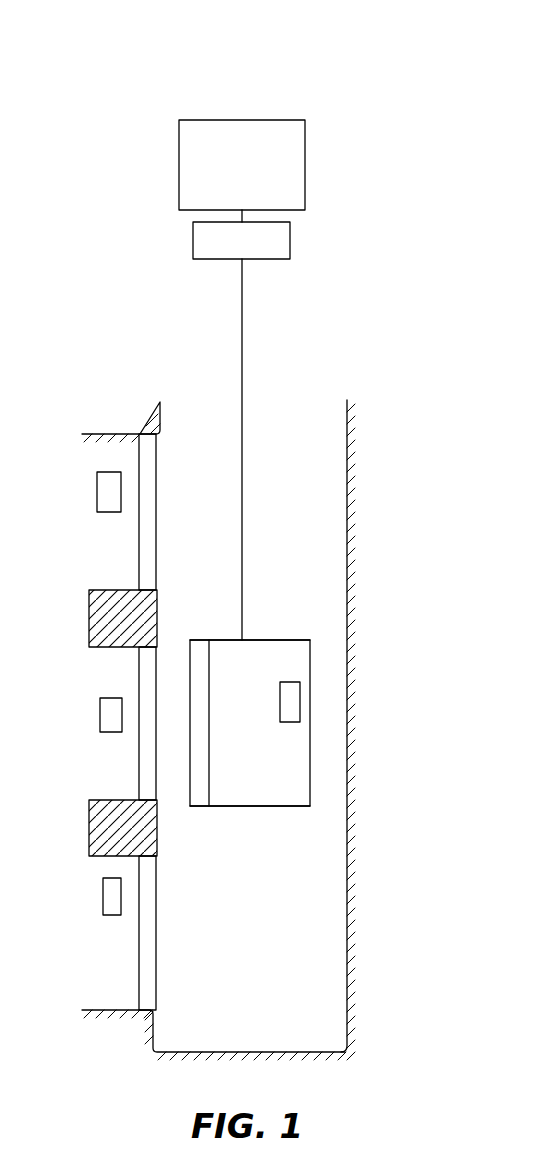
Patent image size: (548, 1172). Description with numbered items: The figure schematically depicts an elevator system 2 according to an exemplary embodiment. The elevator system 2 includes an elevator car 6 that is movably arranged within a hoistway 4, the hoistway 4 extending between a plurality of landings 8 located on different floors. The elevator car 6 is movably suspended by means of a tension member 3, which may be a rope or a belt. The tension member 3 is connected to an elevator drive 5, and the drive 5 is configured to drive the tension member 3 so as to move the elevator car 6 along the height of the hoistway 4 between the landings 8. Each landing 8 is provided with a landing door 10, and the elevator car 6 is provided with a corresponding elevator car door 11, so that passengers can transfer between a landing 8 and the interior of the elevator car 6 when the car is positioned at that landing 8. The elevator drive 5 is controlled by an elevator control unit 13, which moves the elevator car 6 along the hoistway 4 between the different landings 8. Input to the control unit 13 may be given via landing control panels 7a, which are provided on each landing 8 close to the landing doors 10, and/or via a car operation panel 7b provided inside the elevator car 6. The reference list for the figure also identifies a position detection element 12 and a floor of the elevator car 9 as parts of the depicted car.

The elevator system 2 is at (422, 71).
The tension member 3 is at (244, 348).
The hoistway 4 is at (175, 396).
The elevator drive 5 is at (217, 245).
The elevator car 6 is at (250, 755).
The landing control panel 7a is at (106, 481).
The car operation panel 7b is at (290, 708).
The landing 8 is at (86, 576).
The car floor 9 is at (270, 805).
The landing door 10 is at (150, 481).
The elevator car door 11 is at (200, 684).
The position detection element 12 is at (250, 650).
The elevator control unit 13 is at (288, 172).